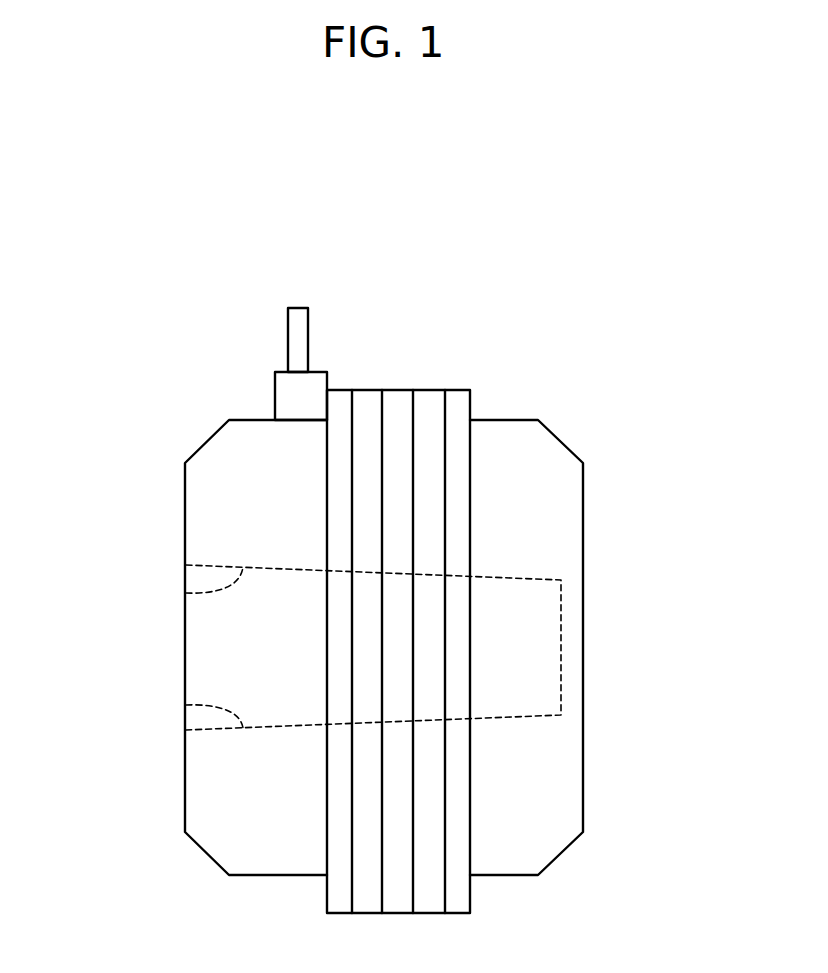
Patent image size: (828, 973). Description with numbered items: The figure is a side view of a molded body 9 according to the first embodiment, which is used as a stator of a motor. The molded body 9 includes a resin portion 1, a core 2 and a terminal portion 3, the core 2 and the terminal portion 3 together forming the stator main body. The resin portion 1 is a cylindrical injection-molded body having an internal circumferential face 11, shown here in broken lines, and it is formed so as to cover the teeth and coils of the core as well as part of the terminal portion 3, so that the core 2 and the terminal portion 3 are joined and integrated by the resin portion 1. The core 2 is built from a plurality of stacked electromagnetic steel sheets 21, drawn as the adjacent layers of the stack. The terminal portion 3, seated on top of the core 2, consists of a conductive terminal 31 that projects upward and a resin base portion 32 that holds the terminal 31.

The molded body 9 is at (608, 288).
The resin portion 1 is at (203, 803).
The internal circumferential face 11 is at (186, 593).
The core 2 is at (335, 283).
The electromagnetic steel sheet 21 is at (338, 400).
The terminal portion 3 is at (202, 243).
The terminal 31 is at (298, 318).
The base portion 32 is at (285, 400).